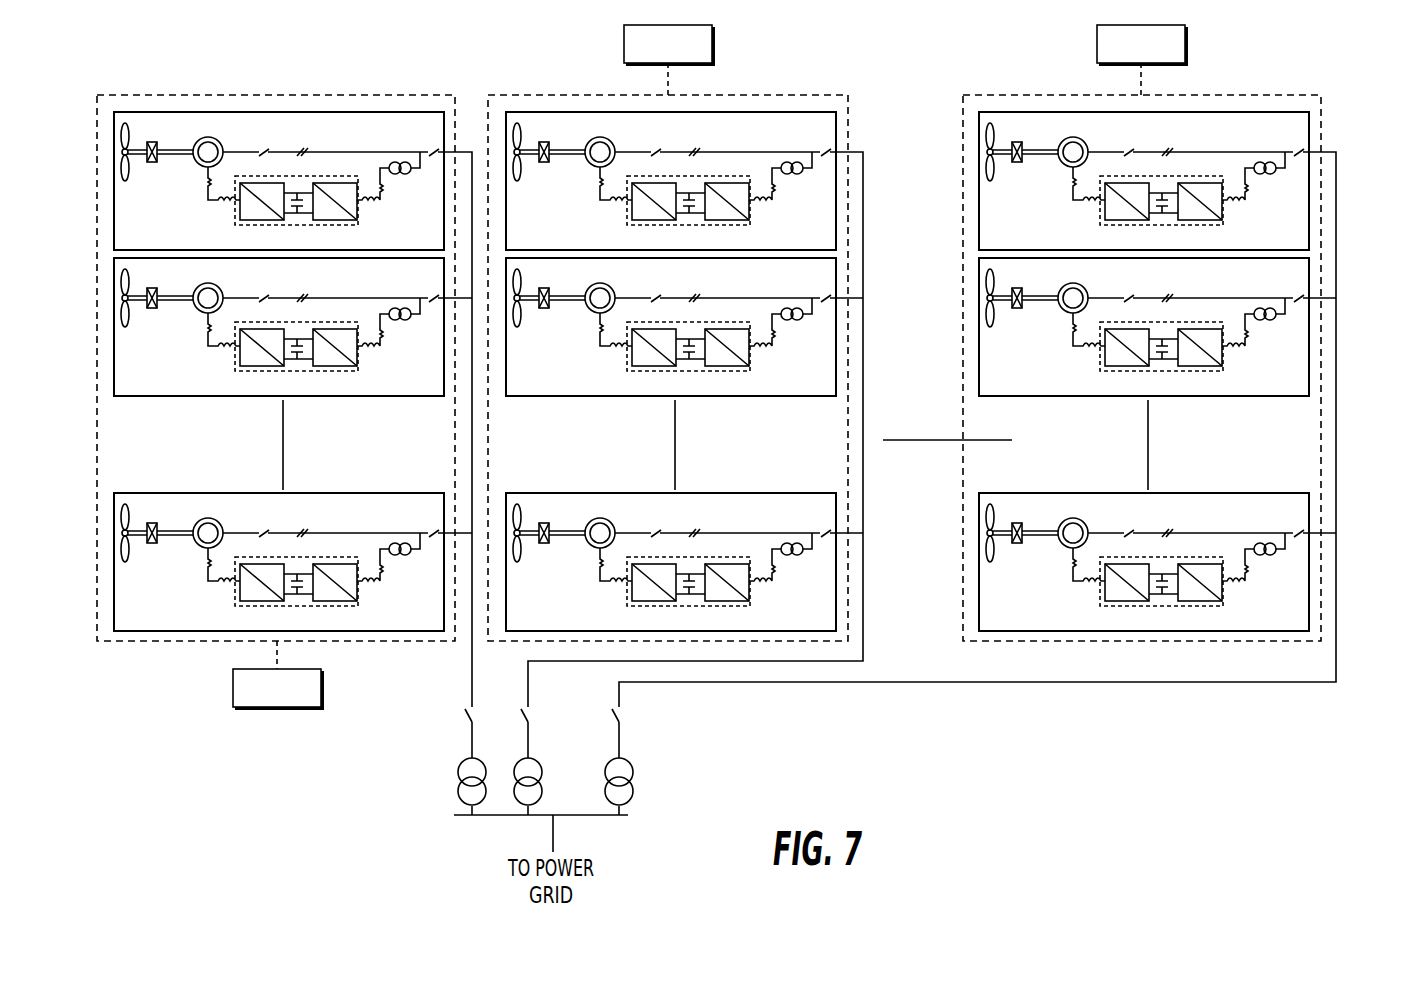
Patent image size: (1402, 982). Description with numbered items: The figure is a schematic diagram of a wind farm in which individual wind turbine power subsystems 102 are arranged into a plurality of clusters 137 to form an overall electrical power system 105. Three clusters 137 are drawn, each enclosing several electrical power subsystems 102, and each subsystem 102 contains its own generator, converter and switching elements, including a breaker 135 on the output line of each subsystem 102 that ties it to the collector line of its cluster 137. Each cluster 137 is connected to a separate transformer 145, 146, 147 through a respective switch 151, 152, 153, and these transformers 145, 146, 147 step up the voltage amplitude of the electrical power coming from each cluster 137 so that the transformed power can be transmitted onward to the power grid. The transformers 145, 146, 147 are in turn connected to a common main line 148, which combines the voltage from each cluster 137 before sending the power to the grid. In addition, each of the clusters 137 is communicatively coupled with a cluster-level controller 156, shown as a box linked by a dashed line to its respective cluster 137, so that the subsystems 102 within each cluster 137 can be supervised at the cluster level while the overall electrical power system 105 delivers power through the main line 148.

The electrical power subsystem 102 is at (114, 170).
The electrical power system 105 is at (1350, 148).
The breaker 135 is at (817, 326).
The cluster 137 is at (97, 268).
The transformer 145 is at (458, 773).
The transformer 146 is at (533, 760).
The transformer 147 is at (632, 768).
The main line 148 is at (495, 818).
The switch 151 is at (452, 712).
The switch 152 is at (519, 711).
The cluster breaker 153 is at (626, 718).
The cluster-level controller 156 is at (685, 57).